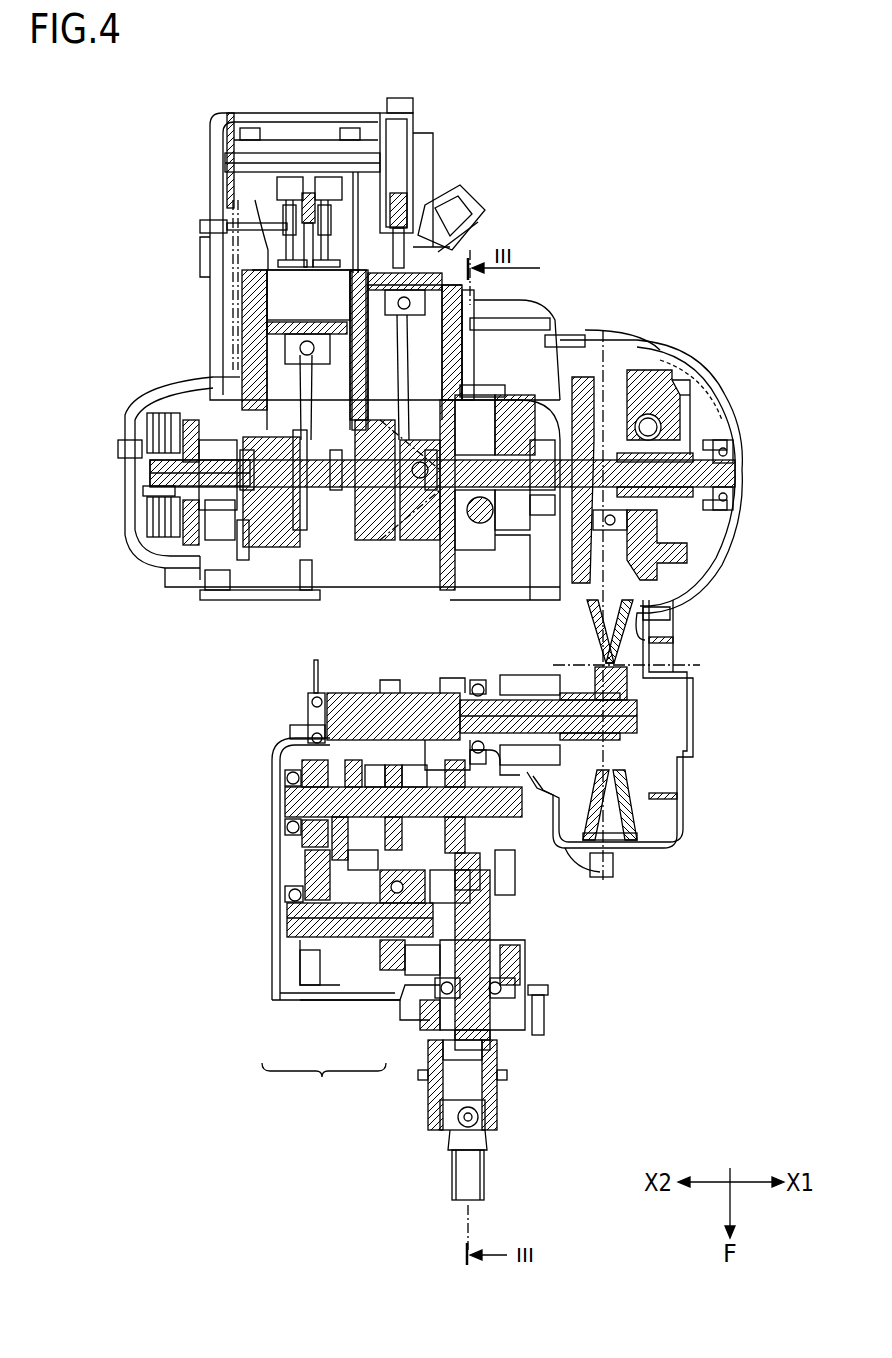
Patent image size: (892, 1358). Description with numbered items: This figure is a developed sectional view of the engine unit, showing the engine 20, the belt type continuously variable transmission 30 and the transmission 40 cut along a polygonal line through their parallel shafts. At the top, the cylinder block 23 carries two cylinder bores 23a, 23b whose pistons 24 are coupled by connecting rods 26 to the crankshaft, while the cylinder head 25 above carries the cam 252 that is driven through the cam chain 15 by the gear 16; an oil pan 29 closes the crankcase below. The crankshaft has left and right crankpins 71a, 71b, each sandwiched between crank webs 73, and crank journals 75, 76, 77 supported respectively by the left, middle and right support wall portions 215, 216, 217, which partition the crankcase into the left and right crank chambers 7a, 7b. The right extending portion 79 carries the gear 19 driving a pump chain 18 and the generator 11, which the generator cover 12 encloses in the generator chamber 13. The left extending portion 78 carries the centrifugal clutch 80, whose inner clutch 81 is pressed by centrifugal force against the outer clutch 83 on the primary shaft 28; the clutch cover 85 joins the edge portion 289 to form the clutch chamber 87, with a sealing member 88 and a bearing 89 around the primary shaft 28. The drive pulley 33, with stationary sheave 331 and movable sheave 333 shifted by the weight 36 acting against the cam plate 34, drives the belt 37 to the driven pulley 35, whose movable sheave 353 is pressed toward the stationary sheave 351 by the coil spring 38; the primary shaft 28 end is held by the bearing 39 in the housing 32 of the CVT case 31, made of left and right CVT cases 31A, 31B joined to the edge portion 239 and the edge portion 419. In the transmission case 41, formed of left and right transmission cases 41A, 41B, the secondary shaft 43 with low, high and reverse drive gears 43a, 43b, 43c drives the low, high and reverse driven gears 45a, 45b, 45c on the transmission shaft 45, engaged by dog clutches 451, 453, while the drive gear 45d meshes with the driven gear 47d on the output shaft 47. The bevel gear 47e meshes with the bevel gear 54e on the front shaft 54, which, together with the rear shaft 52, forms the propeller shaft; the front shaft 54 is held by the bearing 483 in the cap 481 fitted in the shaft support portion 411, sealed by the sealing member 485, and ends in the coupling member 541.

The generator 11 is at (150, 516).
The generator cover 12 is at (126, 448).
The generator chamber 13 is at (122, 457).
The cam chain 15 is at (233, 305).
The gear 16 is at (160, 430).
The pump chain 18 is at (240, 545).
The gear 19 is at (205, 532).
The engine 20 is at (490, 188).
The cylinder block 23 is at (215, 330).
The cylinder bore 23a is at (382, 276).
The cylinder bore 23b is at (285, 290).
The piston 24 is at (354, 318).
The cylinder head 25 is at (210, 192).
The connecting rod 26 is at (354, 377).
The primary shaft 28 is at (712, 474).
The oil pan 29 is at (215, 590).
The belt type continuously variable transmission 30 is at (742, 582).
The CVT case 31 is at (726, 855).
The left CVT case 31A is at (640, 850).
The right CVT case 31B is at (600, 880).
The housing 32 is at (734, 450).
The drive pulley 33 is at (782, 322).
The stationary sheave 331 is at (672, 376).
The movable sheave 333 is at (665, 388).
The cam plate 34 is at (705, 442).
The driven pulley 35 is at (740, 777).
The stationary sheave 351 is at (630, 812).
The movable sheave 353 is at (600, 790).
The weight 36 is at (658, 430).
The belt 37 is at (650, 630).
The coil spring 38 is at (700, 665).
The bearing 39 is at (734, 500).
The transmission 40 is at (246, 998).
The transmission case 41 is at (322, 1088).
The left transmission case 41A is at (400, 1010).
The right transmission case 41B is at (320, 1010).
The shaft support portion 411 is at (560, 1010).
The edge portion 419 is at (522, 795).
The secondary shaft 43 is at (345, 716).
The low drive gear 43a is at (305, 677).
The high drive gear 43b is at (458, 688).
The reverse drive gear 43c is at (395, 690).
The transmission shaft 45 is at (300, 806).
The low driven gear 45a is at (300, 762).
The high driven gear 45b is at (475, 885).
The reverse driven gear 45c is at (295, 732).
The drive gear 45d is at (300, 832).
The dog clutch 451 is at (355, 838).
The dog clutch 453 is at (450, 745).
The output shaft 47 is at (300, 920).
The driven gear 47d is at (310, 869).
The bevel gear 47e is at (400, 962).
The cap 481 is at (520, 992).
The bearing 483 is at (500, 1000).
The sealing member 485 is at (442, 1030).
The rear shaft 52 is at (488, 545).
The front shaft 54 is at (482, 905).
The bevel gear 54e is at (522, 962).
The coupling member 541 is at (505, 1090).
The left crankpin 71a is at (402, 485).
The right crankpin 71b is at (300, 520).
The crank web 73 is at (262, 520).
The left crank journal 75 is at (462, 590).
The middle crank journal 76 is at (304, 586).
The right crank journal 77 is at (252, 560).
The left extending portion 78 is at (475, 472).
The right extending portion 79 is at (150, 470).
The left crank chamber 7a is at (470, 395).
The right crank chamber 7b is at (252, 405).
The centrifugal clutch 80 is at (560, 590).
The inner clutch 81 is at (568, 420).
The outer clutch 83 is at (602, 378).
The clutch cover 85 is at (582, 560).
The clutch chamber 87 is at (520, 402).
The sealing member 88 is at (548, 496).
The bearing 89 is at (548, 508).
The left support wall portion 215 is at (495, 400).
The middle support wall portion 216 is at (364, 272).
The right support wall portion 217 is at (228, 430).
The edge portion 239 is at (458, 350).
The cam 252 is at (322, 152).
The edge portion 289 is at (478, 375).